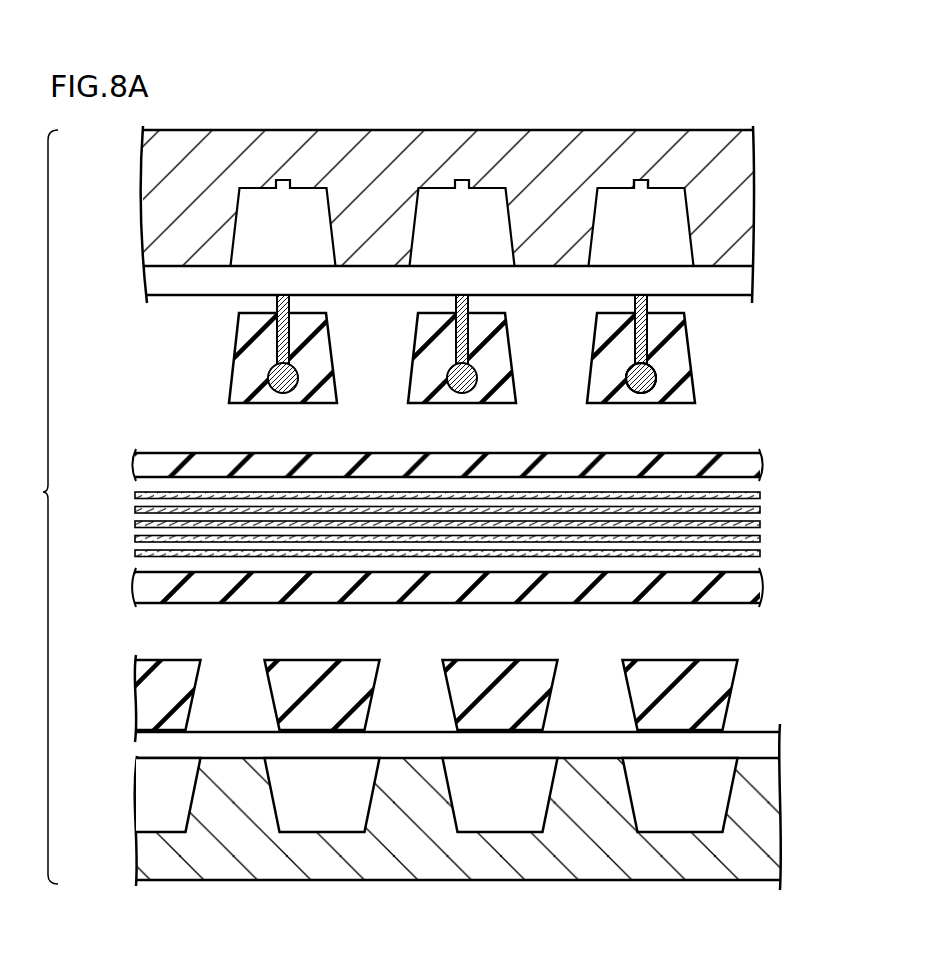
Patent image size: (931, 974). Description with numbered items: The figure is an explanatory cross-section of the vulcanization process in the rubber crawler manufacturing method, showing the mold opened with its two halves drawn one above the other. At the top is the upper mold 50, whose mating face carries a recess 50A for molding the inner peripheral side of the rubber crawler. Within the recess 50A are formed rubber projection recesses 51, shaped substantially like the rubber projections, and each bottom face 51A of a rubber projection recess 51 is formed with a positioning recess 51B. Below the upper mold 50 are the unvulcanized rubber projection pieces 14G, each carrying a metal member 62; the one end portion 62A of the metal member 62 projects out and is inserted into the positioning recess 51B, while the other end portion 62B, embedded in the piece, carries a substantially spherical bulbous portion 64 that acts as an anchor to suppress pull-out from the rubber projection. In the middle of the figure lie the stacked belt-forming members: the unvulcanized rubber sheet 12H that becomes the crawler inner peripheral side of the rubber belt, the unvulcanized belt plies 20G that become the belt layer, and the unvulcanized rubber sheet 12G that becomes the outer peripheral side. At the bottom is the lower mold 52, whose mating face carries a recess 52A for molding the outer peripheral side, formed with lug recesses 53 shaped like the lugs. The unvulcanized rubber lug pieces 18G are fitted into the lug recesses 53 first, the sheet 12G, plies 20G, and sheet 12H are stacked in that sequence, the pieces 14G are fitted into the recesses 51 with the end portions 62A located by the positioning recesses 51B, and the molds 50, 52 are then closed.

The upper mold 50 is at (728, 129).
The rubber projection recess 51 is at (329, 216).
The bottom face of rubber projection recess 51A is at (617, 189).
The positioning recess 51B is at (648, 187).
The recess of upper mold 50A is at (736, 270).
The metal member 62 is at (276, 297).
The one end portion of metal member 62A is at (643, 296).
The other end portion of metal member 62B is at (643, 394).
The bulbous portion 64 is at (623, 389).
The unvulcanized rubber projection piece 14G is at (333, 352).
The unvulcanized rubber sheet 12H is at (733, 452).
The unvulcanized belt plies 20G is at (124, 490).
The unvulcanized rubber sheet 12G is at (724, 605).
The unvulcanized rubber lug piece 18G is at (193, 699).
The lug recess 53 is at (185, 811).
The recess of lower mold 52A is at (760, 756).
The lower mold 52 is at (740, 884).